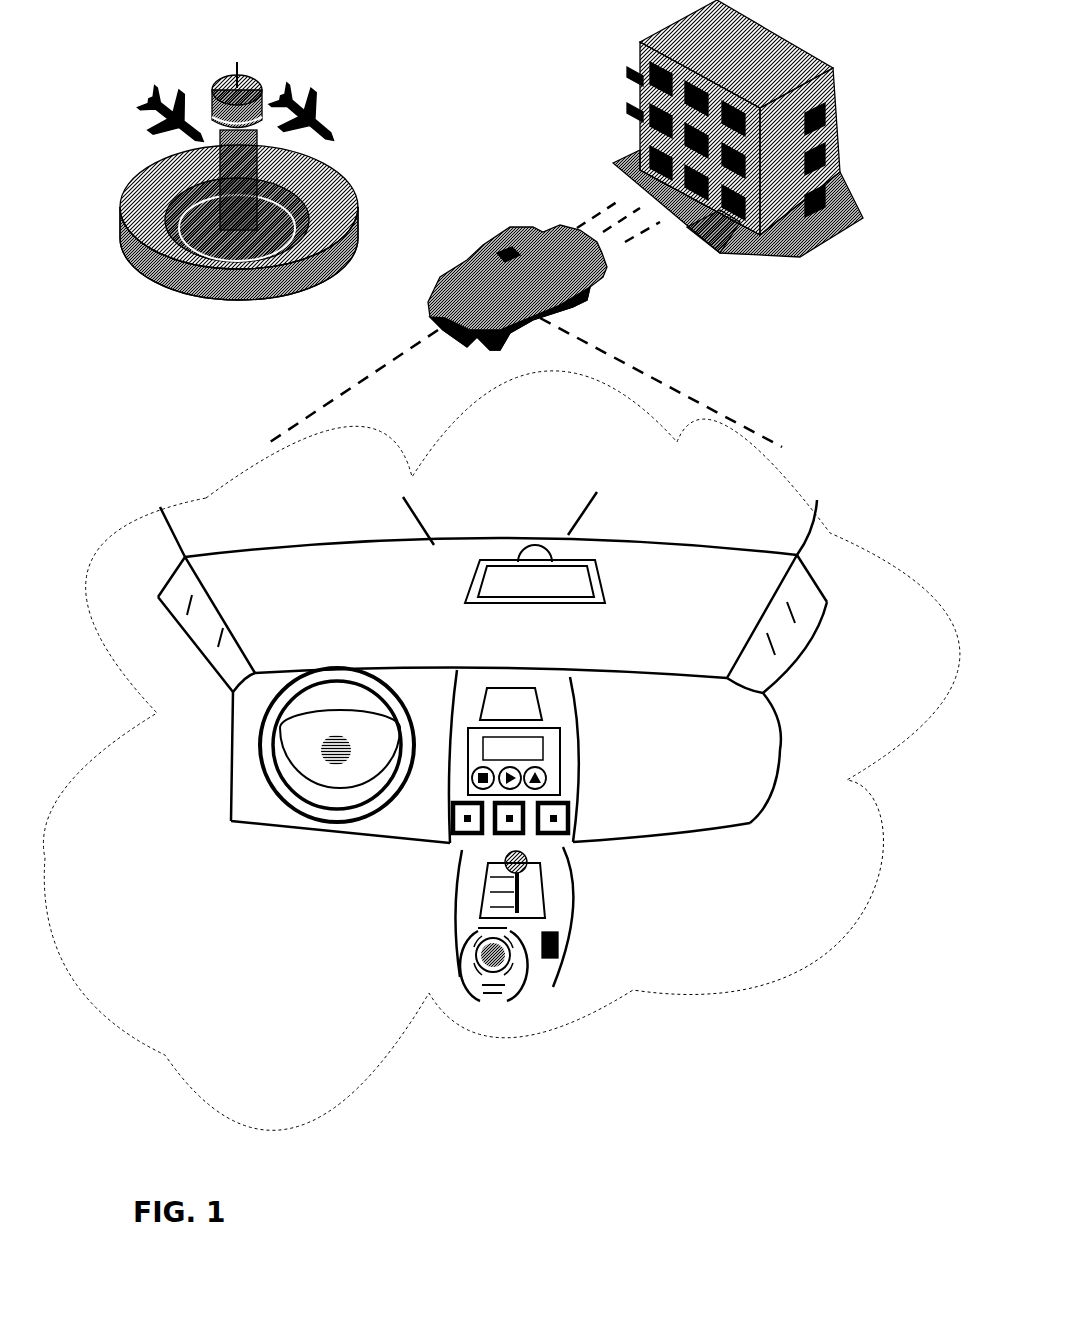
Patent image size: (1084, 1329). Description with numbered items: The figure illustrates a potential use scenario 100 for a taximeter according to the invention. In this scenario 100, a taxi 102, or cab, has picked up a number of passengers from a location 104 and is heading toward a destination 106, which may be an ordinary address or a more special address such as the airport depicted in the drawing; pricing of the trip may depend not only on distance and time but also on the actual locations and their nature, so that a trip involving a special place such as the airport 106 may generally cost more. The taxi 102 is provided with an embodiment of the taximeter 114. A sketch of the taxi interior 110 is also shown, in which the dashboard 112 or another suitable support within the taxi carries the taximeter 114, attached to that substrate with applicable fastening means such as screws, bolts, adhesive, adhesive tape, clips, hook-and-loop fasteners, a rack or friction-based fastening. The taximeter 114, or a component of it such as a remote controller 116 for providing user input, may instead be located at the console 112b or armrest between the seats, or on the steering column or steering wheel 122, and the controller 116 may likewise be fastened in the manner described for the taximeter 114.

The scenario 100 is at (173, 41).
The taxi 102 is at (513, 223).
The location 104 is at (635, 142).
The destination 106 is at (325, 177).
The taxi interior 110 is at (280, 493).
The dashboard 112 is at (433, 735).
The console 112b is at (567, 892).
The taximeter 114 is at (560, 762).
The remote controller 116 is at (518, 973).
The steering wheel 122 is at (386, 790).